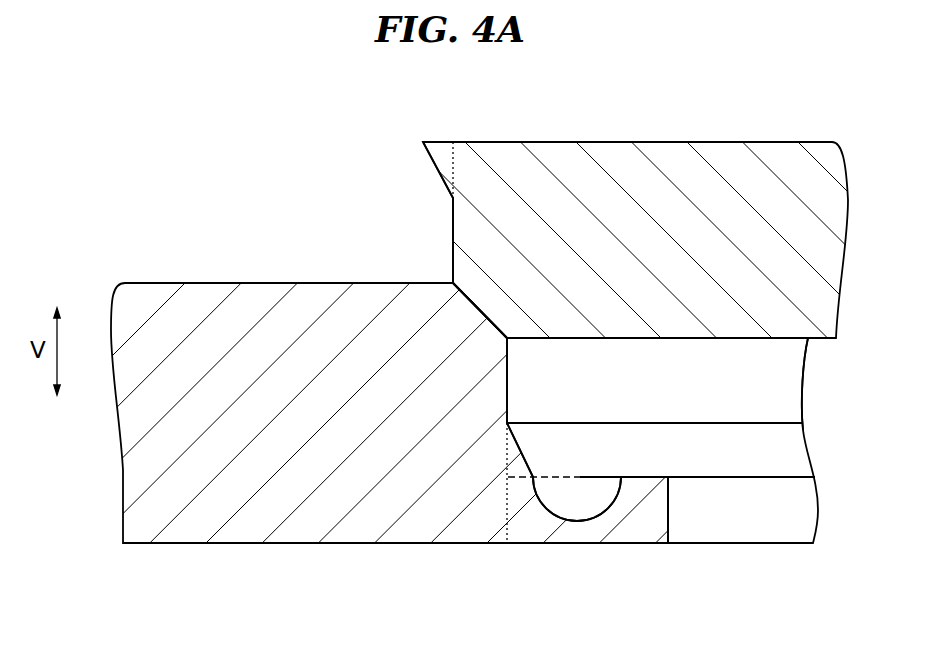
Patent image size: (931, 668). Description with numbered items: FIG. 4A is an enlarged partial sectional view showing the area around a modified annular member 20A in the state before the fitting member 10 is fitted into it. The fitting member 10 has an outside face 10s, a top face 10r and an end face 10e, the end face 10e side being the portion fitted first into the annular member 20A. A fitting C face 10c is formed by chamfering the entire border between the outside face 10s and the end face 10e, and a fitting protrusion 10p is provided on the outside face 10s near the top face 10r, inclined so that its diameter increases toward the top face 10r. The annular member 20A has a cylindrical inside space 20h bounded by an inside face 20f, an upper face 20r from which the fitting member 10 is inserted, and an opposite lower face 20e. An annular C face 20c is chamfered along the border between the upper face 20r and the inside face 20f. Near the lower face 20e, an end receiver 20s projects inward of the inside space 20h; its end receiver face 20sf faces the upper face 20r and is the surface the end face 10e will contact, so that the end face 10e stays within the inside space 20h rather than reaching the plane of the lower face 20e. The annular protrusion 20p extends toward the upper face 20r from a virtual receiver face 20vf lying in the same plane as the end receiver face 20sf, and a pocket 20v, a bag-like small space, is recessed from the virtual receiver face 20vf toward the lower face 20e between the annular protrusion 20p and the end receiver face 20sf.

The fitting member 10 is at (567, 142).
The fitting protrusion 10p is at (440, 142).
The outside face 10s is at (446, 216).
The fitting C face 10c is at (466, 316).
The top face 10r is at (684, 134).
The end face 10e is at (737, 344).
The annular member 20A is at (181, 544).
The upper face 20r is at (203, 280).
The annular C face 20c is at (503, 320).
The inside face 20f is at (514, 370).
The inside space 20h is at (712, 404).
The annular protrusion 20p is at (518, 458).
The virtual receiver face 20vf is at (566, 470).
The pocket 20v is at (578, 504).
The end receiver 20s is at (643, 527).
The end receiver face 20sf is at (649, 472).
The lower face 20e is at (317, 546).